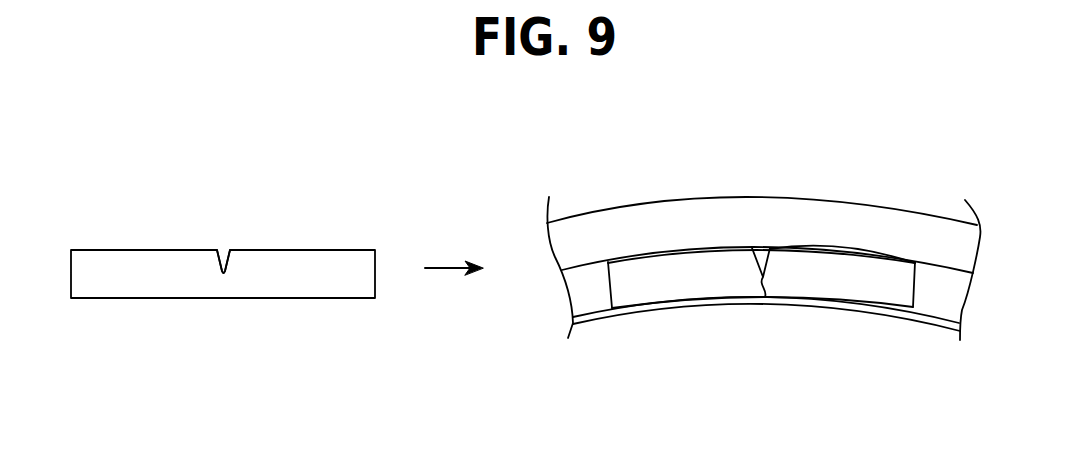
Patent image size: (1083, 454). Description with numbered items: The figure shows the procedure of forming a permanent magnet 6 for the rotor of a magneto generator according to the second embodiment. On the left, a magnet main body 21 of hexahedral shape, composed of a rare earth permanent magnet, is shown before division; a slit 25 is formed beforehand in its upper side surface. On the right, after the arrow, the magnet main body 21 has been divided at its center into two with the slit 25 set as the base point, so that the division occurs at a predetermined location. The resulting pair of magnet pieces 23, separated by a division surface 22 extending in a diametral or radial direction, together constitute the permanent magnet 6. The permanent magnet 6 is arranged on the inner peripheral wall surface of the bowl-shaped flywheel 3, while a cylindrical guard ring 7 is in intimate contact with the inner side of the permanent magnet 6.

The flywheel 3 is at (865, 218).
The permanent magnet 6 is at (793, 280).
The guard ring 7 is at (928, 323).
The magnet main body 21 is at (268, 278).
The division surface 22 is at (770, 285).
The magnet piece 23 is at (678, 280).
The slit 25 is at (227, 249).